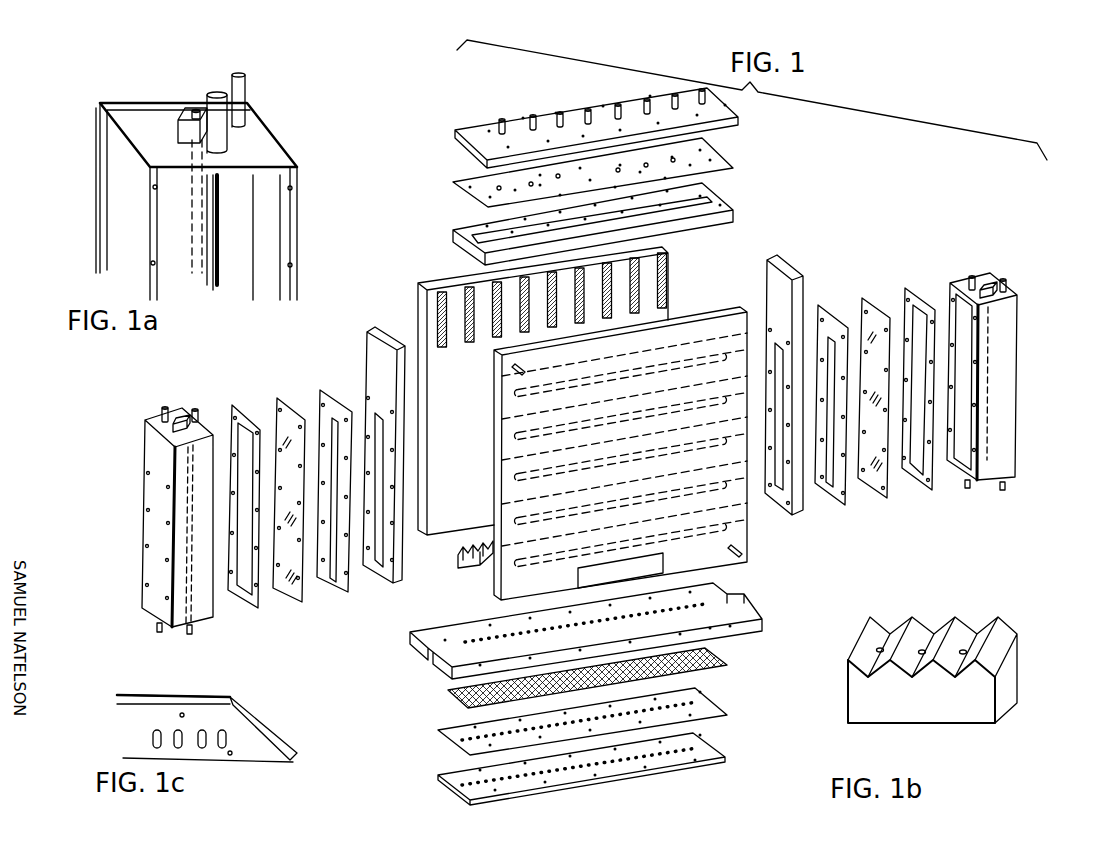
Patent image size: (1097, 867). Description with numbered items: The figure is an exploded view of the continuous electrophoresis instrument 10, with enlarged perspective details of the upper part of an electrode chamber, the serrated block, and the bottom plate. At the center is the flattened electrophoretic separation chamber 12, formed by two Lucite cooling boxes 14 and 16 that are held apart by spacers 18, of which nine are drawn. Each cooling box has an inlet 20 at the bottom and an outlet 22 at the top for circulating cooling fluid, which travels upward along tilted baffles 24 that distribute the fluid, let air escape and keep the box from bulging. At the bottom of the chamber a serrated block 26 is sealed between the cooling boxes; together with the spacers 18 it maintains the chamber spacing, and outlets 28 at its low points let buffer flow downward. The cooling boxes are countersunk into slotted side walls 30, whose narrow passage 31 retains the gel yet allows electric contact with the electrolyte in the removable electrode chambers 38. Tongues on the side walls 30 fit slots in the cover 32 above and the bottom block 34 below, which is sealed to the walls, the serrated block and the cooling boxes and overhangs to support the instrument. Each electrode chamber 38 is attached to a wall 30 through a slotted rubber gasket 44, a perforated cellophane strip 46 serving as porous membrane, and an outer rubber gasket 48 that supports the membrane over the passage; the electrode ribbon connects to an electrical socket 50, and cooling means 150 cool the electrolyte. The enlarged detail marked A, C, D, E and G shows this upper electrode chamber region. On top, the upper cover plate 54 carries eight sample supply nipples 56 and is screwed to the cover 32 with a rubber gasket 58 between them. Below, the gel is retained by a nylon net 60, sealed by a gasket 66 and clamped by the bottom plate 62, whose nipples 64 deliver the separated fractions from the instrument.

In FIG. 1, the continuous electrophoresis instrument 10 is at (774, 160).
In FIG. 1, the electrophoretic separation chamber 12 is at (461, 441).
In FIG. 1, the cooling box 14 is at (554, 391).
In FIG. 1, the cooling box 16 is at (611, 442).
In FIG. 1, the spacers 18 is at (666, 297).
In FIG. 1, the inlet 20 is at (739, 547).
In FIG. 1, the outlet 22 is at (513, 373).
In FIG. 1, the baffles 24 is at (737, 359).
In FIG. 1, the serrated block 26 is at (456, 556).
In FIG. 1B, the serrated block 26 is at (967, 710).
In FIG. 1, the outlets 28 is at (482, 568).
In FIG. 1B, the outlets 28 is at (963, 652).
In FIG. 1, the side walls 30 is at (588, 425).
In FIG. 1, the narrow passage 31 is at (377, 548).
In FIG. 1, the cover 32 is at (472, 237).
In FIG. 1, the bottom block 34 is at (445, 656).
In FIG. 1, the electrode chambers 38 is at (146, 430).
In FIG. 1, the rubber gasket 44 is at (335, 393).
In FIG. 1, the cellophane strip 46 is at (282, 402).
In FIG. 1, the outer rubber gasket 48 is at (245, 410).
In FIG. 1A, the electrical socket 50 is at (192, 115).
In FIG. 1, the upper cover plate 54 is at (472, 132).
In FIG. 1, the sample supply nipples 56 is at (497, 127).
In FIG. 1, the rubber gasket 58 is at (472, 185).
In FIG. 1, the nylon net 60 is at (456, 691).
In FIG. 1, the bottom plate 62 is at (452, 780).
In FIG. 1C, the bottom plate 62 is at (250, 742).
In FIG. 1C, the nipples 64 is at (180, 749).
In FIG. 1, the gasket 66 is at (455, 732).
In FIG. 1, the cooling means 150 is at (663, 561).
In FIG. 1A, the housing A is at (122, 168).
In FIG. 1, the channel C is at (185, 500).
In FIG. 1A, the channel C is at (197, 268).
In FIG. 1A, the cylinder D is at (219, 94).
In FIG. 1A, the cylinder E is at (238, 75).
In FIG. 1, the holes G is at (145, 543).
In FIG. 1A, the holes G is at (293, 262).